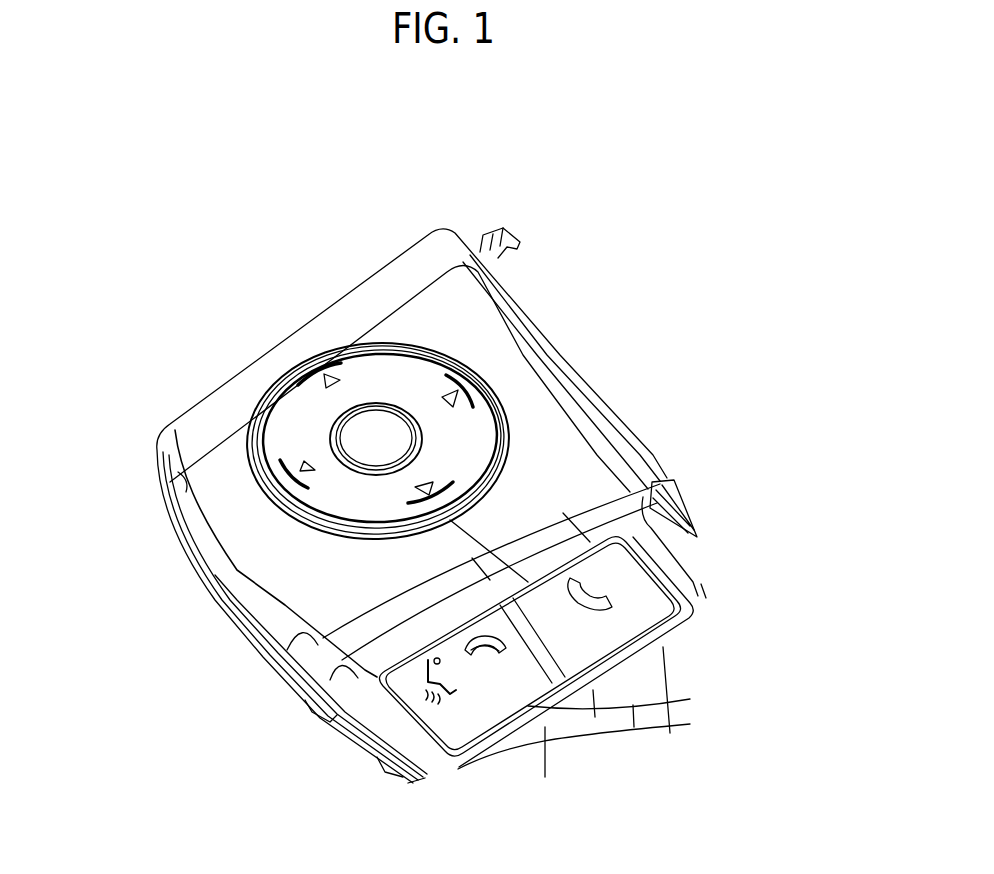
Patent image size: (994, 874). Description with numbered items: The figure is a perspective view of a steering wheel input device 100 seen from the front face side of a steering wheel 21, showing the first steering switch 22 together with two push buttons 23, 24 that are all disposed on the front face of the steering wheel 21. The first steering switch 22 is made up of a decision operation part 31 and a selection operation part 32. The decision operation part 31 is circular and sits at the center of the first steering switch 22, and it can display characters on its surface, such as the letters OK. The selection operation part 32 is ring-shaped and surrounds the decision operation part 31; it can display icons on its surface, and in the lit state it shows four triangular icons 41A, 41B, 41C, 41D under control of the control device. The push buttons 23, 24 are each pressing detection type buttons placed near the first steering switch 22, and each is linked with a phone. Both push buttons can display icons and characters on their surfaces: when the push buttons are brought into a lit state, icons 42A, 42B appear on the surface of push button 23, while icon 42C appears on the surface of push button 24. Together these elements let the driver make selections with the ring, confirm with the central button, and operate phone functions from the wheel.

The steering wheel input device 100 is at (733, 134).
The steering wheel 21 is at (392, 312).
The first steering switch 22 is at (125, 563).
The push button 23 is at (357, 737).
The push button 24 is at (645, 600).
The decision operation part 31 is at (367, 467).
The selection operation part 32 is at (365, 492).
The icon 41A is at (303, 465).
The icon 41B is at (420, 487).
The icon 41C is at (452, 395).
The icon 41D is at (333, 370).
The icon 42A is at (450, 703).
The icon 42B is at (497, 667).
The icon 42C is at (600, 612).